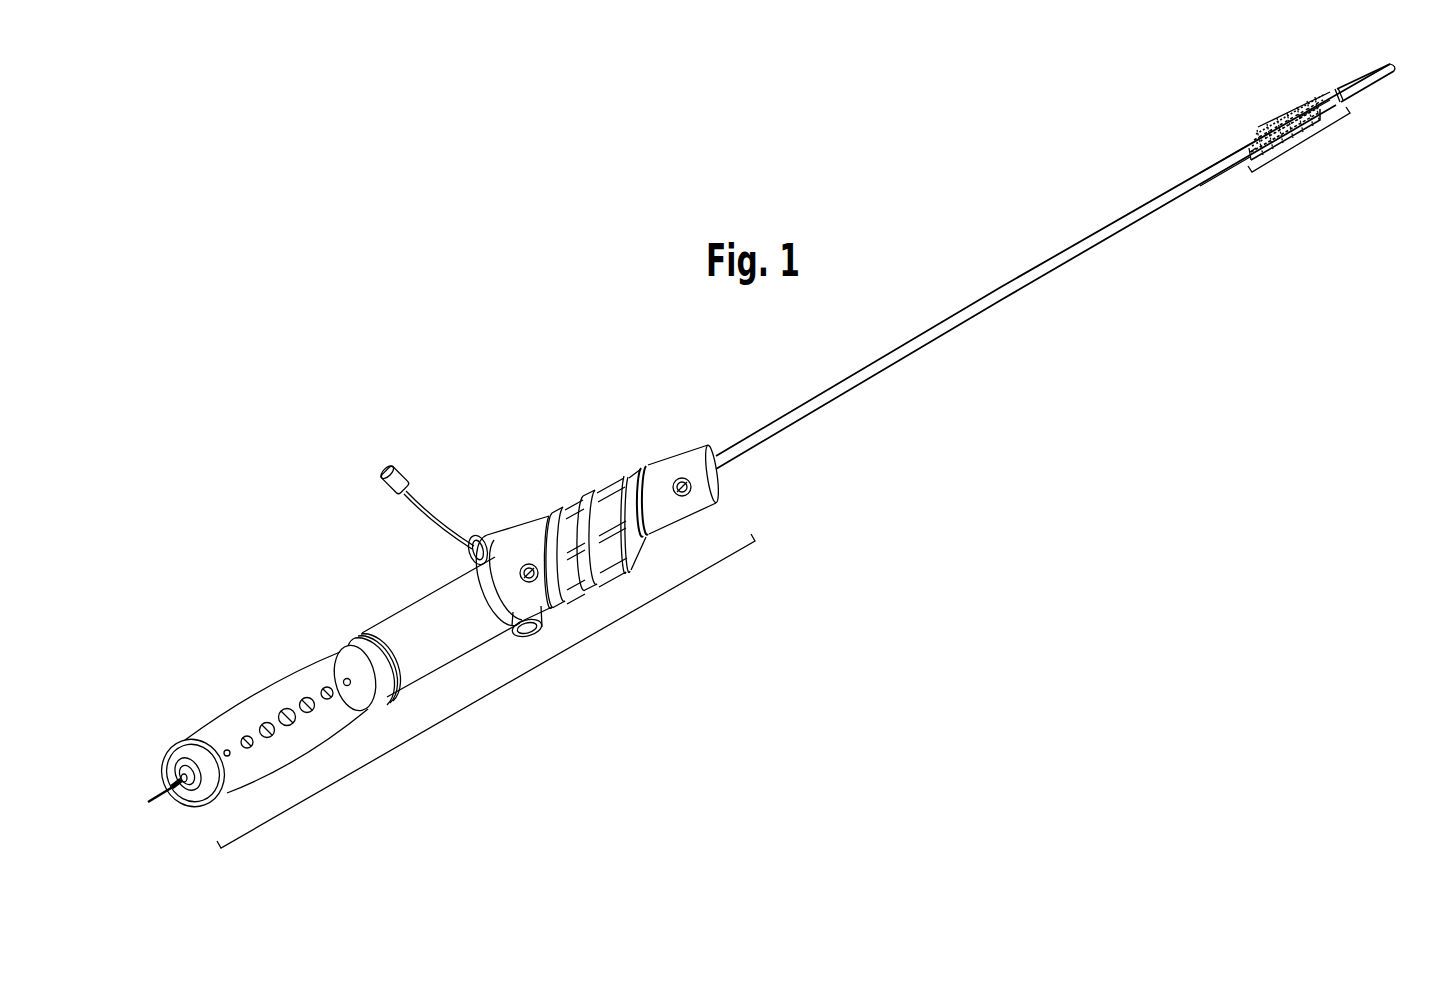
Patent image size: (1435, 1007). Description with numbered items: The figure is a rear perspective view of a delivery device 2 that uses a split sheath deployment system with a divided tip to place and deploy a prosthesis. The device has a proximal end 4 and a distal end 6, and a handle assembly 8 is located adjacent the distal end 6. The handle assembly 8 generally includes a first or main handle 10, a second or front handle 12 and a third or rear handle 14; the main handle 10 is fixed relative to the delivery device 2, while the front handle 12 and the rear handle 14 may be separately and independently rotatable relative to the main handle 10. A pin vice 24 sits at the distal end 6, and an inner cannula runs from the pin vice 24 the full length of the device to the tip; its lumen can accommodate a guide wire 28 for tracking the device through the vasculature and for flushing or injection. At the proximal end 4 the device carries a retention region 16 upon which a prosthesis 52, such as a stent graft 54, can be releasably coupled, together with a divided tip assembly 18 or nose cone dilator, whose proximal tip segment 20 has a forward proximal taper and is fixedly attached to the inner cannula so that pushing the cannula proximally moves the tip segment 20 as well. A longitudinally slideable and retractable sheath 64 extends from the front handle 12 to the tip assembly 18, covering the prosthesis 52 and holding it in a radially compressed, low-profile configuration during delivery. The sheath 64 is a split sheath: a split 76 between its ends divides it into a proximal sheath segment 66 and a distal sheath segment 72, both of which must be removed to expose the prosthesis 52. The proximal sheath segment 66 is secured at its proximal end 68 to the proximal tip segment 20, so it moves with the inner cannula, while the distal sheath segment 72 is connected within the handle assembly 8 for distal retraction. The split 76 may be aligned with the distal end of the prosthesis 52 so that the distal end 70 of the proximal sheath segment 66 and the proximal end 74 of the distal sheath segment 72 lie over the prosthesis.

The delivery device 2 is at (668, 371).
The proximal end 4 is at (1397, 79).
The distal end 6 is at (256, 631).
The handle assembly 8 is at (490, 694).
The main handle 10 is at (463, 575).
The front handle 12 is at (283, 693).
The rear handle 14 is at (343, 719).
The retention region 16 is at (1302, 144).
The tip assembly 18 is at (1360, 100).
The proximal tip segment 20 is at (1392, 63).
The pin vice 24 is at (170, 783).
The guide wire 28 is at (150, 805).
The prosthesis 52 is at (1261, 98).
The stent graft 54 is at (1292, 113).
The sheath 64 is at (1053, 266).
The proximal sheath segment 66 is at (1310, 99).
The proximal end of the proximal sheath segment 68 is at (1330, 93).
The distal end of the proximal sheath segment 70 is at (1262, 130).
The distal sheath segment 72 is at (1070, 247).
The proximal end of the distal sheath segment 74 is at (1252, 141).
The split 76 is at (1258, 164).